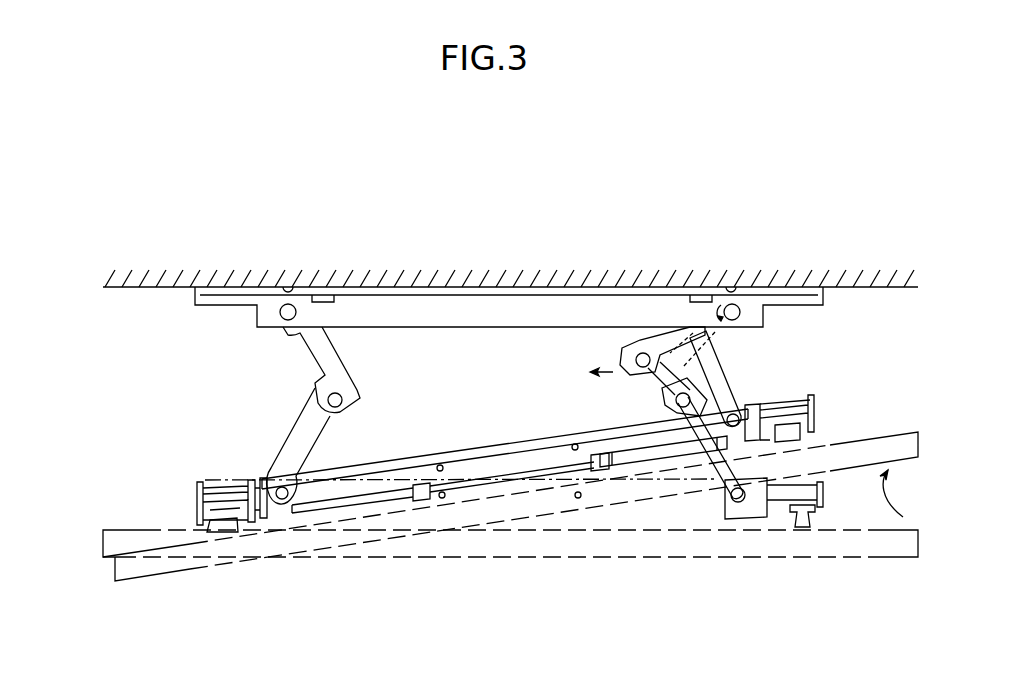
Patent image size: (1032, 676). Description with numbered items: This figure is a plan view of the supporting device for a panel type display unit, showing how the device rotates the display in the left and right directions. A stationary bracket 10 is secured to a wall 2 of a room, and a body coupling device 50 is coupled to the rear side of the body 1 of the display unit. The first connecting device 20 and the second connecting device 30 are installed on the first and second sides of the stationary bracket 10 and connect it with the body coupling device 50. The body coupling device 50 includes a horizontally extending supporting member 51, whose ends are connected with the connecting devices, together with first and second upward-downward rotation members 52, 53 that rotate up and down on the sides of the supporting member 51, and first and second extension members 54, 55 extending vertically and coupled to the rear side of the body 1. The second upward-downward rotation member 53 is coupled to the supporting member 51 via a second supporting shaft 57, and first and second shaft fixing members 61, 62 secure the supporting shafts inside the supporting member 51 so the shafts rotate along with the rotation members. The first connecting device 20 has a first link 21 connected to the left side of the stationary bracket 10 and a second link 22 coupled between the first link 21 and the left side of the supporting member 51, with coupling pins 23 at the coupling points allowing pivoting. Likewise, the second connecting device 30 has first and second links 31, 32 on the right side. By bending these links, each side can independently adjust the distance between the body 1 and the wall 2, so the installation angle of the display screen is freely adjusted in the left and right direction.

The body 1 is at (115, 572).
The wall 2 is at (155, 287).
The stationary bracket 10 is at (500, 312).
The first connecting device 20 is at (300, 391).
The first link 21 is at (333, 352).
The second link 22 is at (316, 428).
The coupling pins 23 is at (286, 304).
The second connecting device 30 is at (690, 362).
The first link 31 is at (625, 345).
The second link 32 is at (665, 405).
The body coupling device 50 is at (185, 493).
The supporting member 51 is at (507, 454).
The first upward-downward rotation member 52 is at (355, 514).
The second upward-downward rotation member 53 is at (667, 452).
The first extension member 54 is at (200, 525).
The second extension member 55 is at (812, 428).
The second supporting shaft 57 is at (792, 406).
The first shaft fixing member 61 is at (422, 501).
The second shaft fixing member 62 is at (602, 470).